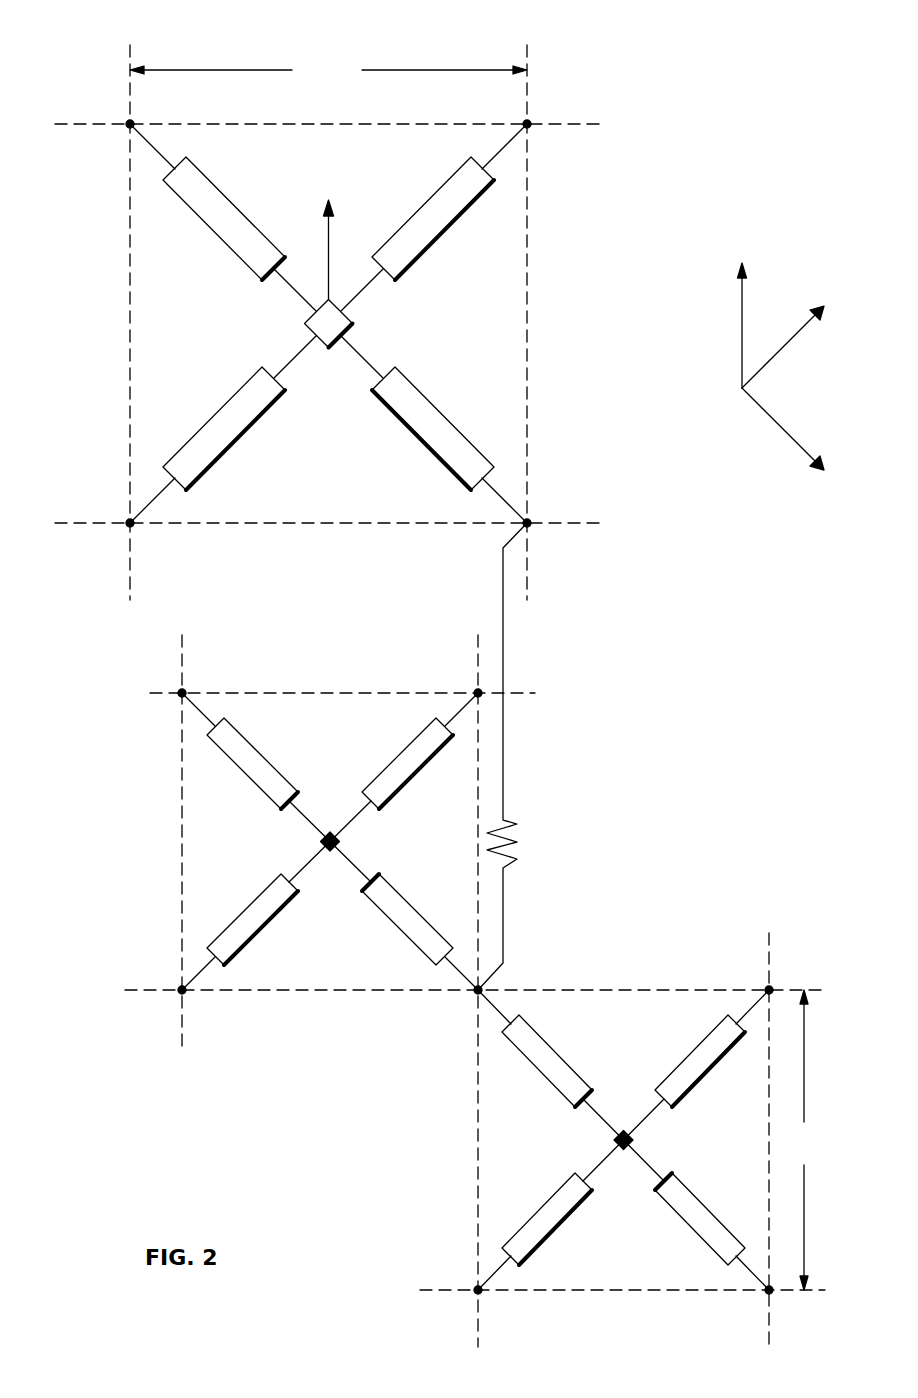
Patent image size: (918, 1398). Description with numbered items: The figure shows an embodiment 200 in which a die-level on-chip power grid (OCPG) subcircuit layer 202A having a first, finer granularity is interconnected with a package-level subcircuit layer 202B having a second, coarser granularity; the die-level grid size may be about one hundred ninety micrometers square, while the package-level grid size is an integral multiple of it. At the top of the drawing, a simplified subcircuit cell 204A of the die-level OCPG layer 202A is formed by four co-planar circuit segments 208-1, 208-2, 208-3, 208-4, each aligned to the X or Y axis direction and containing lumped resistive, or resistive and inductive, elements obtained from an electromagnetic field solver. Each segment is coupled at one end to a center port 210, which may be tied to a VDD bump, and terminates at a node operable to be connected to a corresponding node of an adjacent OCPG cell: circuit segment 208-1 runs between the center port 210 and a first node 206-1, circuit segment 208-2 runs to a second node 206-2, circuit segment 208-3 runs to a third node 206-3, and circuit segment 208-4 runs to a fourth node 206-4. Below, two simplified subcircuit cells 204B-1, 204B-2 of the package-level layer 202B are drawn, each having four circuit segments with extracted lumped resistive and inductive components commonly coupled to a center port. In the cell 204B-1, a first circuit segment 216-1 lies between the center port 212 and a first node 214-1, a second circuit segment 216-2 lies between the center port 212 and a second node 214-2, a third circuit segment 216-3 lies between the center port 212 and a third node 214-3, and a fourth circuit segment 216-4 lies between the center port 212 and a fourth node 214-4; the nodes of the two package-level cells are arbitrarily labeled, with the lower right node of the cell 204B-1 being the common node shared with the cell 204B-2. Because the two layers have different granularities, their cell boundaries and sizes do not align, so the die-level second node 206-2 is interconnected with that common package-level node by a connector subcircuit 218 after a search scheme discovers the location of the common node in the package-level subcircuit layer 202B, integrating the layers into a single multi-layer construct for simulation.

The embodiment 200 is at (792, 90).
The die-level OCPG subcircuit layer 202A is at (583, 322).
The package-level subcircuit layer 202B is at (537, 996).
The subcircuit cell of the die-level OCPG layer 204A is at (71, 322).
The subcircuit cell of the package-level layer 204B-1 is at (476, 1020).
The subcircuit cell of the package-level layer 204B-2 is at (622, 1320).
The first node (D1) 206-1 is at (78, 498).
The second node (D2) 206-2 is at (581, 498).
The third node (D3) 206-3 is at (581, 148).
The fourth node (D4) 206-4 is at (78, 148).
The circuit segment 208-1 is at (229, 424).
The circuit segment 208-2 is at (428, 424).
The circuit segment 208-3 is at (428, 224).
The circuit segment 208-4 is at (229, 224).
The center port 210 is at (325, 310).
The center port 212 is at (284, 830).
The first node 214-1 is at (130, 966).
The second node 214-2 is at (130, 719).
The third node 214-3 is at (551, 671).
The fourth node 214-4 is at (549, 976).
The first circuit segment 216-1 is at (278, 916).
The second circuit segment 216-2 is at (279, 767).
The third circuit segment 216-3 is at (381, 767).
The fourth circuit segment 216-4 is at (382, 916).
The connector subcircuit 218 is at (542, 756).